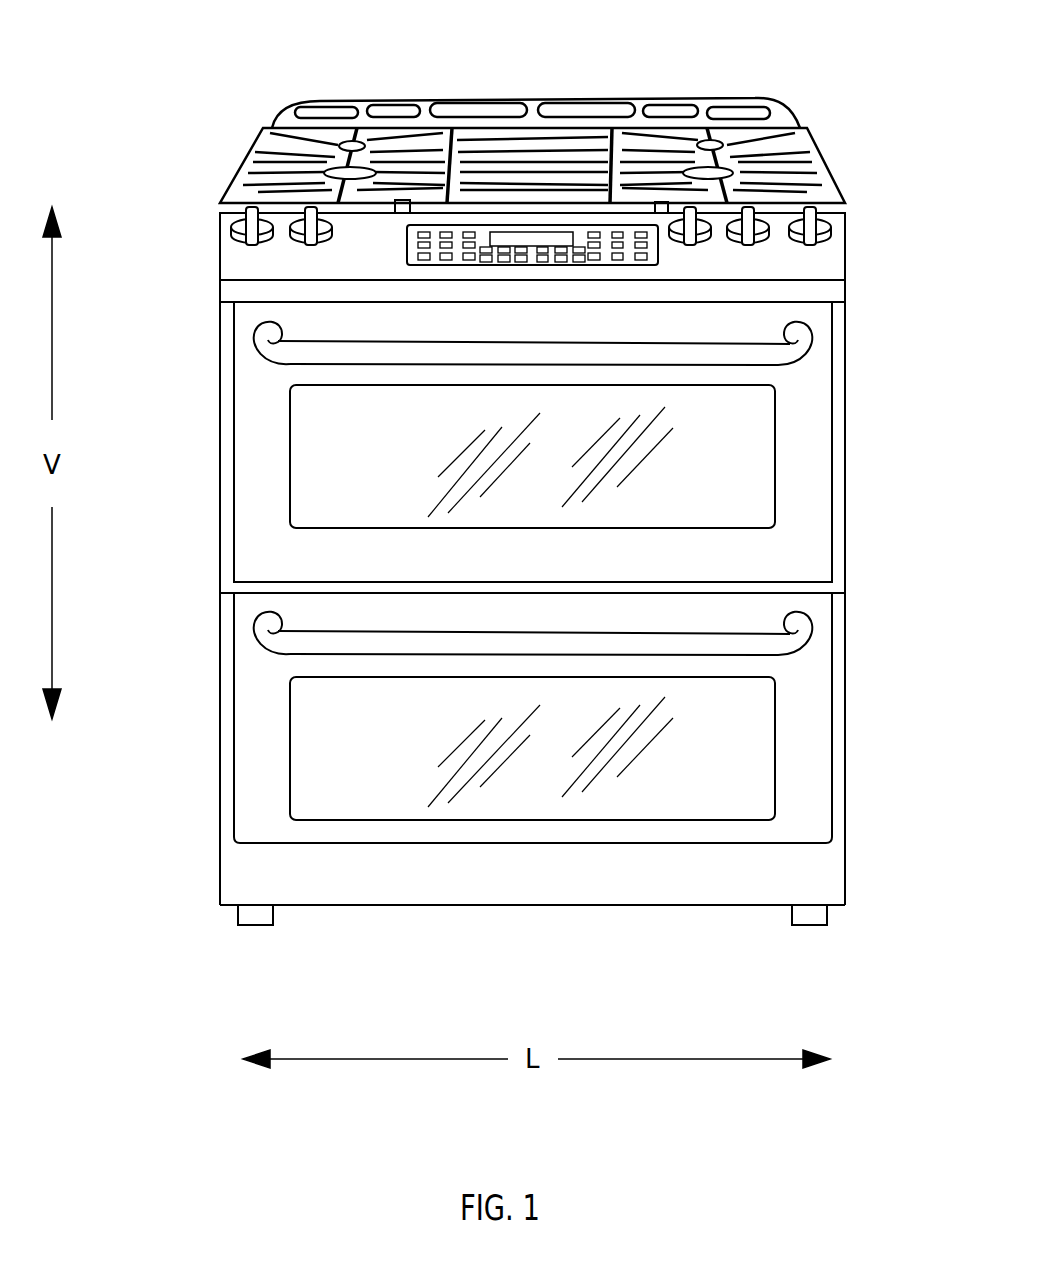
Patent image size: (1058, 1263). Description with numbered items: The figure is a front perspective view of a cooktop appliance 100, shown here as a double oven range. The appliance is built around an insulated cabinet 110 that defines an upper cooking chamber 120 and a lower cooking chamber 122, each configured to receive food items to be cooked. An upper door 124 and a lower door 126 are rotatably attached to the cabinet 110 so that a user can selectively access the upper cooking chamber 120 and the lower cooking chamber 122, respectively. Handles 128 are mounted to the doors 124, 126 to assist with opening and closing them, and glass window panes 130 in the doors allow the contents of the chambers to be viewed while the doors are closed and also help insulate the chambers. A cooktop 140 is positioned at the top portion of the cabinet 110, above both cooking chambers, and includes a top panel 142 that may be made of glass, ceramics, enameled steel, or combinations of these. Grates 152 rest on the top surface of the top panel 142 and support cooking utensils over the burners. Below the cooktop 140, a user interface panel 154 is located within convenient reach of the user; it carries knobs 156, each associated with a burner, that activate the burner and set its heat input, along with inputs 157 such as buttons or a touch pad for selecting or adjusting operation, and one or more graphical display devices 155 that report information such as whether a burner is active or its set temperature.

The cooktop appliance 100 is at (190, 110).
The cabinet 110 is at (706, 290).
The upper cooking chamber 120 is at (817, 463).
The lower cooking chamber 122 is at (814, 770).
The upper door 124 is at (228, 515).
The lower door 126 is at (228, 780).
The handle 128 is at (358, 358).
The glass window pane 130 is at (750, 507).
The cooktop 140 is at (808, 105).
The top panel 142 is at (856, 208).
The grate 152 is at (245, 172).
The user interface panel 154 is at (410, 252).
The graphical display device 155 is at (527, 237).
The knob 156 is at (248, 246).
The input 157 is at (490, 265).